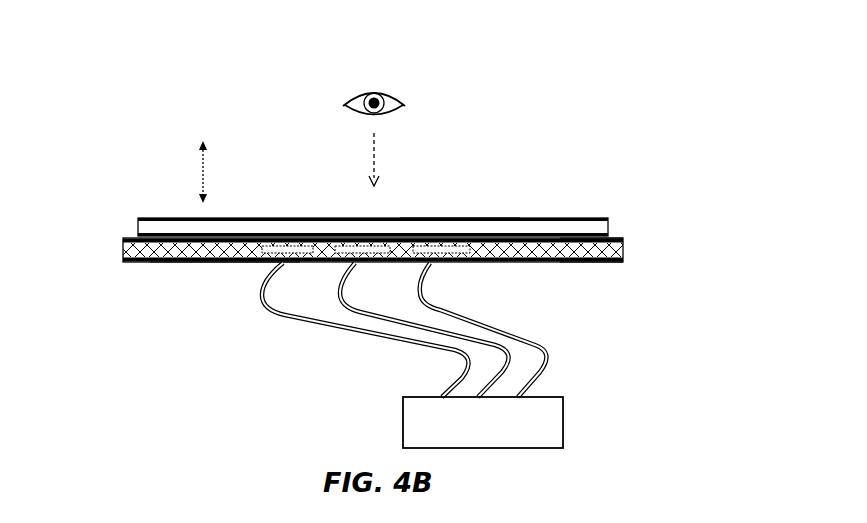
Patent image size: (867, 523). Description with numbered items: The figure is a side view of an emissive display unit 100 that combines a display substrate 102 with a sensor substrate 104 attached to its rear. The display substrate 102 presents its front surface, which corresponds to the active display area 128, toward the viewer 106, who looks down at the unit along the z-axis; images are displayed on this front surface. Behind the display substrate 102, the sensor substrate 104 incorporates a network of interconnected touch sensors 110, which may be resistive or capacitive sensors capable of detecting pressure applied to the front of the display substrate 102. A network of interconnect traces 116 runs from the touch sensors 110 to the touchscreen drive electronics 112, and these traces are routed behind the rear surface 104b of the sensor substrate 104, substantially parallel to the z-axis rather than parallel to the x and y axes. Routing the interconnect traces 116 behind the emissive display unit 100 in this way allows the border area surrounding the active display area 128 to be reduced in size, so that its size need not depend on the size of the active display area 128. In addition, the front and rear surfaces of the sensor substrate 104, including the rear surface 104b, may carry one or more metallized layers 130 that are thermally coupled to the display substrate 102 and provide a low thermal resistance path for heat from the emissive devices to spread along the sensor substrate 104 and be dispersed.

The emissive display unit 100 is at (86, 68).
The display substrate 102 is at (138, 230).
The sensor substrate 104 is at (124, 252).
The rear surface of the sensor substrate 104b is at (197, 263).
The viewer 106 is at (375, 92).
The touch sensors 110 is at (480, 263).
The touchscreen drive electronics 112 is at (483, 422).
The interconnect traces 116 is at (385, 333).
The active display area 128 is at (463, 218).
The metallized layers 130 is at (612, 238).